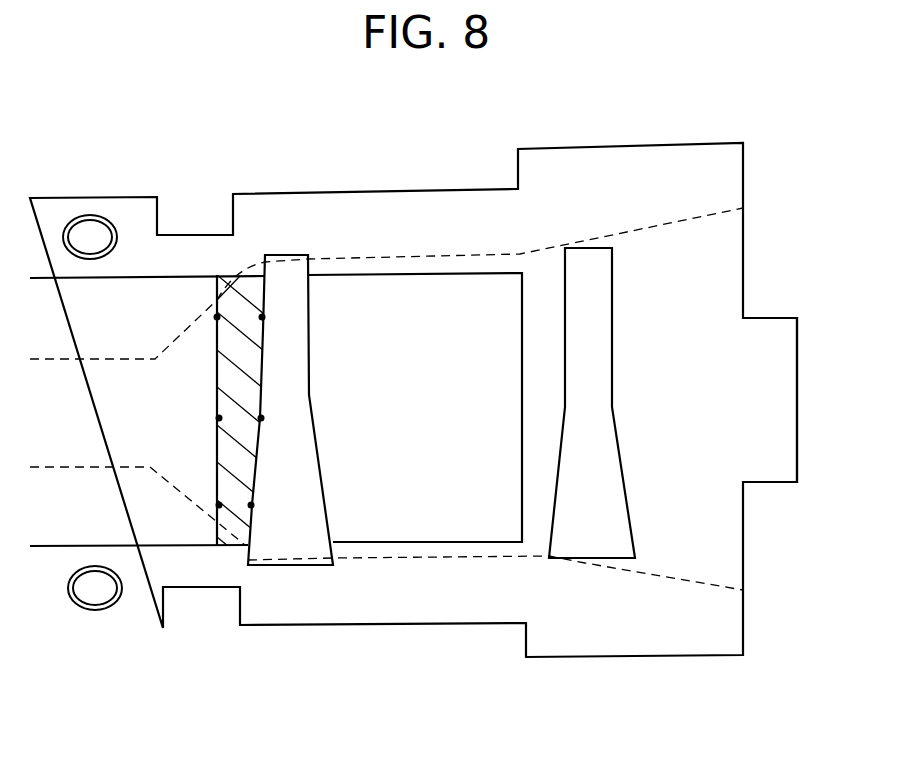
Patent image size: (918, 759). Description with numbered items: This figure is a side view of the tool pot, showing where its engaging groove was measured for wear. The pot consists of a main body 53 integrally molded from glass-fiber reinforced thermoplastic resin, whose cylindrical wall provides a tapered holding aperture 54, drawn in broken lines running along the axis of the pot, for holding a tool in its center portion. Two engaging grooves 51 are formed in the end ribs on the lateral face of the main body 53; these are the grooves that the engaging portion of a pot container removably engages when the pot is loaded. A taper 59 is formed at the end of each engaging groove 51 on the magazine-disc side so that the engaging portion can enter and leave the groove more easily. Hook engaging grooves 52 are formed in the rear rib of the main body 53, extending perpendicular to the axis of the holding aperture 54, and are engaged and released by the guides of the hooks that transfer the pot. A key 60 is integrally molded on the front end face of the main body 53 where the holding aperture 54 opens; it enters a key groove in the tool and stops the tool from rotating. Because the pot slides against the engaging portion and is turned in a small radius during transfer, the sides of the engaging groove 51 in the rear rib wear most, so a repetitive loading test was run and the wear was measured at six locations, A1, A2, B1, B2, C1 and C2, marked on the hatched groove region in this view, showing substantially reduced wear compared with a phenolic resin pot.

The engaging groove 51 is at (286, 295).
The hook engaging groove 52 is at (178, 210).
The main body 53 is at (430, 203).
The holding aperture 54 is at (672, 226).
The taper 59 is at (328, 530).
The key 60 is at (780, 378).
The wear measurement location A1 is at (219, 505).
The wear measurement location A2 is at (251, 505).
The wear measurement location B1 is at (219, 418).
The wear measurement location B2 is at (261, 418).
The wear measurement location C1 is at (217, 317).
The wear measurement location C2 is at (262, 317).